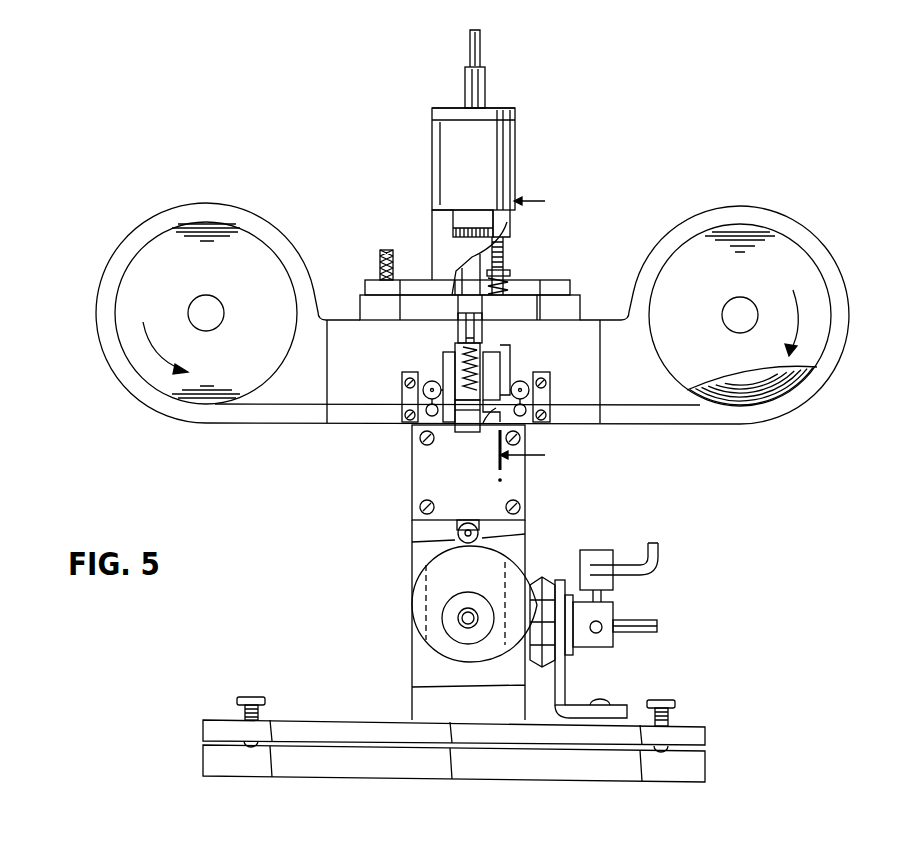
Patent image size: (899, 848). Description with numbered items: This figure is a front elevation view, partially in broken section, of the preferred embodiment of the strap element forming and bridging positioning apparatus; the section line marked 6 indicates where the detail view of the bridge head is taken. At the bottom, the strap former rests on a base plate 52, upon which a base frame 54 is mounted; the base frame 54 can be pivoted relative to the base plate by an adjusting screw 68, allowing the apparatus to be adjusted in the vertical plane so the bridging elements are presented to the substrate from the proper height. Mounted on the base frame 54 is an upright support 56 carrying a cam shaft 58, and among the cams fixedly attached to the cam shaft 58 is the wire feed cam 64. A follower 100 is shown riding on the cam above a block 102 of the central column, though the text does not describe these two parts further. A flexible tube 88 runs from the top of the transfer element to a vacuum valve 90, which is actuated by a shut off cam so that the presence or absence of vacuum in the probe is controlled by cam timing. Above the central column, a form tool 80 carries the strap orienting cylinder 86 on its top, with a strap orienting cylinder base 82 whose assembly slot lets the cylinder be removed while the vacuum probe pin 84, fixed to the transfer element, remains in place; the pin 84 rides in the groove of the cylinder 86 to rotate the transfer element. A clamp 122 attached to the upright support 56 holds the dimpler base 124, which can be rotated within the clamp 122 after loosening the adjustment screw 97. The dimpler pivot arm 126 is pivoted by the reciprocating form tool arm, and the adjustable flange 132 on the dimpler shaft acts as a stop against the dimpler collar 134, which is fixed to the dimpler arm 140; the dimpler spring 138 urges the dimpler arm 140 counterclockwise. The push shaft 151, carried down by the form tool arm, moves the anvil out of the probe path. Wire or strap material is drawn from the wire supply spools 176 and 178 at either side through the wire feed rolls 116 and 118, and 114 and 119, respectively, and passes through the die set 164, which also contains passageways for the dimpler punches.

The base plate 52 is at (700, 770).
The base frame 54 is at (330, 722).
The upright support 56 is at (425, 535).
The cam shaft 58 is at (464, 620).
The wire feed cam 64 is at (420, 582).
The adjusting screw 68 is at (263, 700).
The form tool 80 is at (500, 167).
The strap orienting cylinder base 82 is at (445, 112).
The vacuum probe pin 84 is at (465, 80).
The strap orienting cylinder 86 is at (486, 84).
The flexible tube 88 is at (481, 48).
The vacuum valve 90 is at (547, 578).
The adjustment screw 97 is at (380, 260).
The cam follower roller 100 is at (500, 536).
The slide block 102 is at (425, 482).
The wire feed roll 114 is at (520, 381).
The wire feed roll 116 is at (432, 381).
The wire feed roll 118 is at (405, 416).
The wire feed roll 119 is at (547, 414).
The clamp 122 is at (375, 308).
The dimpler base 124 is at (432, 245).
The dimpler pivot arm 126 is at (452, 222).
The adjustable flange 132 is at (462, 320).
The dimpler collar 134 is at (495, 360).
The dimpler spring 138 is at (470, 360).
The dimpler arm 140 is at (465, 432).
The push shaft 151 is at (503, 248).
The die set 164 is at (482, 428).
The wire supply spool 176 is at (118, 290).
The wire supply spool 178 is at (825, 310).
The section line 6- 6 is at (532, 334).